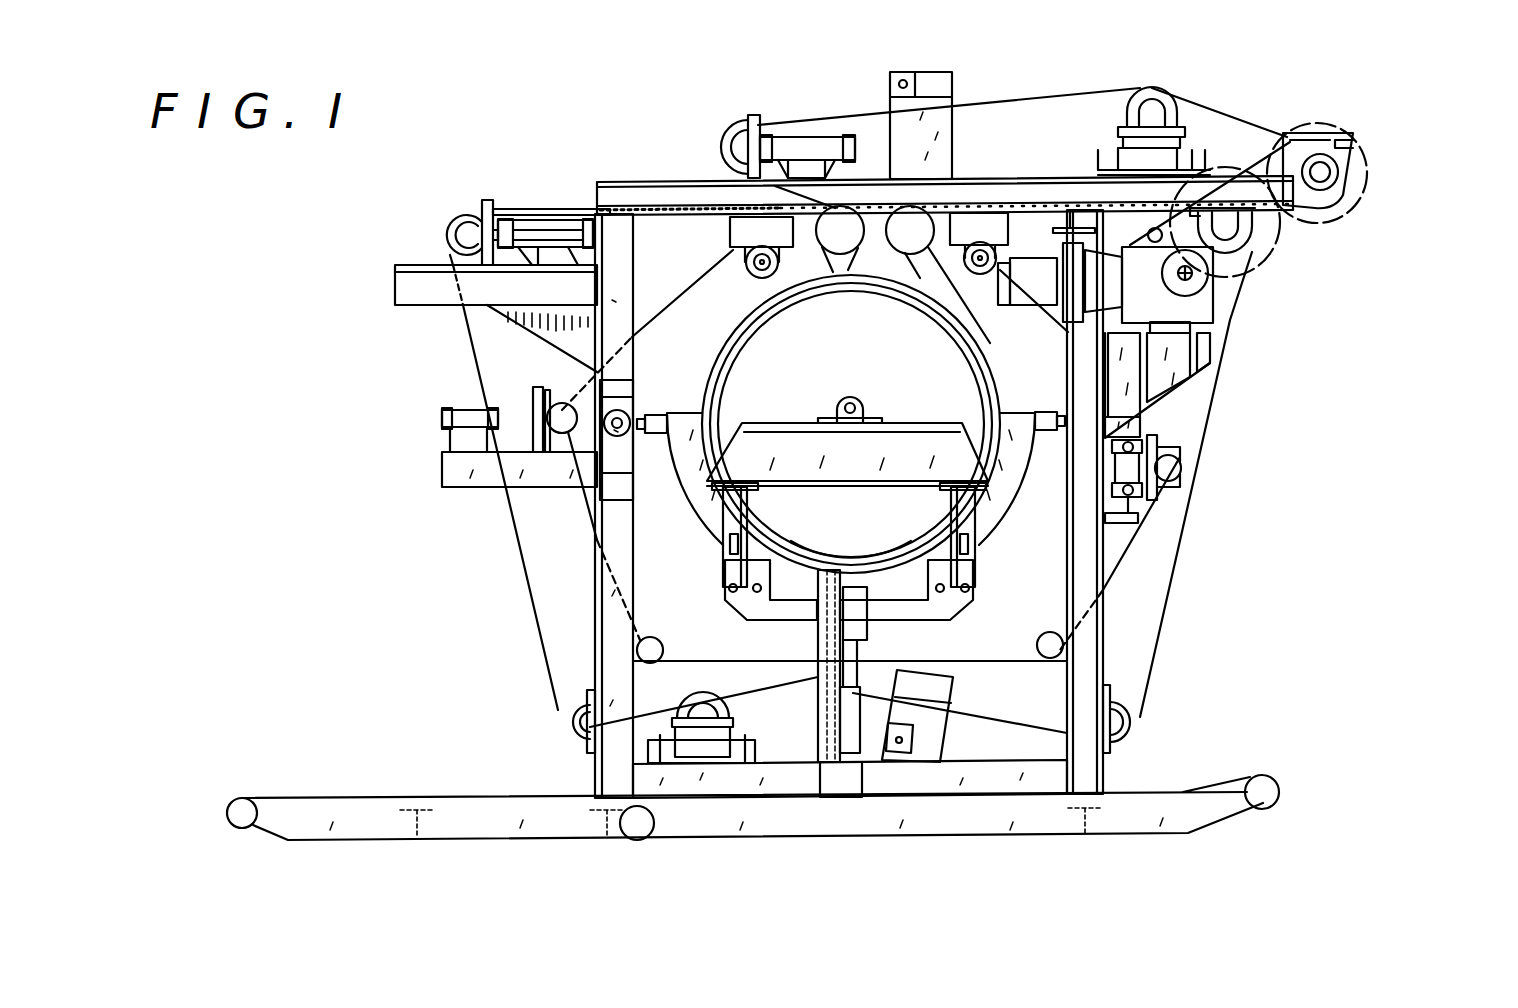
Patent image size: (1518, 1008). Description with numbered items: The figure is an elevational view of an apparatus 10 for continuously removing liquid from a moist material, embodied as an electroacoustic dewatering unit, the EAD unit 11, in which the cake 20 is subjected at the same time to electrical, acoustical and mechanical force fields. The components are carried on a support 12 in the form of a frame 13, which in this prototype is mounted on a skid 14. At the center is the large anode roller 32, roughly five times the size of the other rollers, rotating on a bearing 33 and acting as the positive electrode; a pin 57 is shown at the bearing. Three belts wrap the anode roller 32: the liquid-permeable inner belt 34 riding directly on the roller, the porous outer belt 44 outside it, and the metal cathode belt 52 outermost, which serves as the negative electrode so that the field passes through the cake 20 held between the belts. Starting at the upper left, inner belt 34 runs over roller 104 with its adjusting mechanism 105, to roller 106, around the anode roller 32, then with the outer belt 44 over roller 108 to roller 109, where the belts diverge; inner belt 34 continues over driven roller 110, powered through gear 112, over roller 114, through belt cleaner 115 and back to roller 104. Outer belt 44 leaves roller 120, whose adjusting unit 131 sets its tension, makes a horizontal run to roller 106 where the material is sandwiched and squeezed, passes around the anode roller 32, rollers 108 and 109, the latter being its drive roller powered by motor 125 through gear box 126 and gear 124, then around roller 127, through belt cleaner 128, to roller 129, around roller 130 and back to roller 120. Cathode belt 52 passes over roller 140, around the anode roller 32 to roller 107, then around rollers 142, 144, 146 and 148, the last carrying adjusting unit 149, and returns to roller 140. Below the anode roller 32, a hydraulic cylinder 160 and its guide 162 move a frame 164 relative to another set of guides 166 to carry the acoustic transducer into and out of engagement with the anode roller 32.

The apparatus 10 is at (588, 190).
The EAD unit 11 is at (1105, 775).
The support 12 is at (594, 570).
The frame 13 is at (1030, 176).
The skid 14 is at (1226, 812).
The cake 20 is at (625, 196).
The anode roller 32 is at (723, 384).
The bearing 33 is at (870, 405).
The inner belt 34 is at (775, 132).
The outer belt 44 is at (517, 210).
The cathode belt 52 is at (661, 304).
The pin 57 is at (838, 403).
The roller 104 is at (725, 145).
The adjusting mechanism 105 is at (843, 137).
The roller 106 is at (847, 257).
The roller 107 is at (985, 278).
The roller 108 is at (927, 210).
The roller 109 is at (1262, 260).
The roller 110 is at (1355, 178).
The gear 112 is at (1365, 205).
The roller 114 is at (1165, 92).
The belt cleaner 115 is at (955, 82).
The roller 120 is at (446, 236).
The gear 124 is at (1250, 290).
The motor 125 is at (1030, 266).
The gear box 126 is at (1240, 358).
The roller 127 is at (1142, 725).
The belt cleaner 128 is at (955, 695).
The roller 129 is at (733, 703).
The roller 130 is at (556, 722).
The adjusting unit 131 is at (538, 250).
The roller 140 is at (745, 282).
The roller 142 is at (1185, 470).
The roller 144 is at (1036, 646).
The roller 146 is at (660, 636).
The roller 148 is at (560, 402).
The adjusting unit 149 is at (456, 410).
The hydraulic cylinder 160 is at (863, 683).
The guide 162 is at (817, 632).
The frame 164 is at (975, 596).
The guides 166 is at (712, 535).